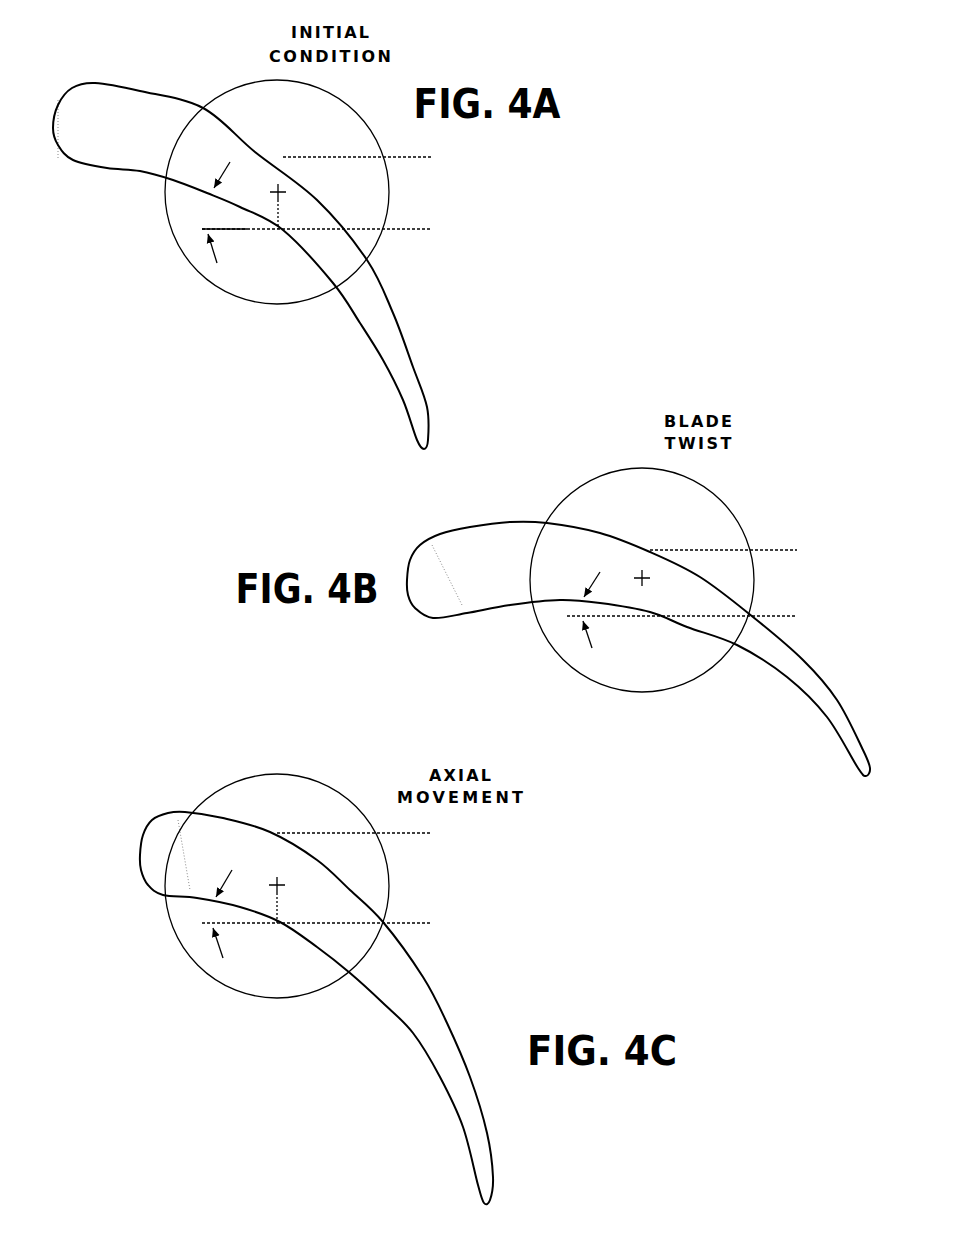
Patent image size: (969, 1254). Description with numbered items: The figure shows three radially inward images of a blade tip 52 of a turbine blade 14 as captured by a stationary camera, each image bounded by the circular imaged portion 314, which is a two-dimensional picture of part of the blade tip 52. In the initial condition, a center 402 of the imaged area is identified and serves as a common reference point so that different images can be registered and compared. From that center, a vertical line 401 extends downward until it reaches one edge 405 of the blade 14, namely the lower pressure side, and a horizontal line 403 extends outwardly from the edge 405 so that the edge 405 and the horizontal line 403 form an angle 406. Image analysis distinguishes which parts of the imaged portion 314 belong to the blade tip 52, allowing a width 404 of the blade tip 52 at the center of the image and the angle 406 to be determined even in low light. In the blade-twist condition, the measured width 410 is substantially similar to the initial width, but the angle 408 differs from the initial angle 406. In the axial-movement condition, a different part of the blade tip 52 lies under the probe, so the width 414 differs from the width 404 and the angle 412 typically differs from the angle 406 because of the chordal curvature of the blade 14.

In FIG. 4A, the blade 14 is at (400, 288).
In FIG. 4B, the blade 14 is at (805, 647).
In FIG. 4C, the blade 14 is at (463, 978).
In FIG. 4A, the blade tip 52 is at (118, 108).
In FIG. 4B, the blade tip 52 is at (465, 568).
In FIG. 4C, the blade tip 52 is at (165, 822).
In FIG. 4A, the imaged portion 314 is at (292, 121).
In FIG. 4B, the imaged portion 314 is at (623, 506).
In FIG. 4C, the imaged portion 314 is at (275, 814).
In FIG. 4A, the vertical line 401 is at (282, 214).
In FIG. 4B, the center 402 is at (648, 574).
In FIG. 4C, the center 402 is at (282, 882).
In FIG. 4A, the horizontal line 403 is at (246, 230).
In FIG. 4A, the width 404 is at (423, 157).
In FIG. 4A, the edge 405 is at (200, 188).
In FIG. 4A, the angle 406 is at (208, 247).
In FIG. 4B, the angle 408 is at (586, 644).
In FIG. 4B, the width 410 is at (790, 550).
In FIG. 4C, the angle 412 is at (212, 947).
In FIG. 4C, the width 414 is at (423, 833).